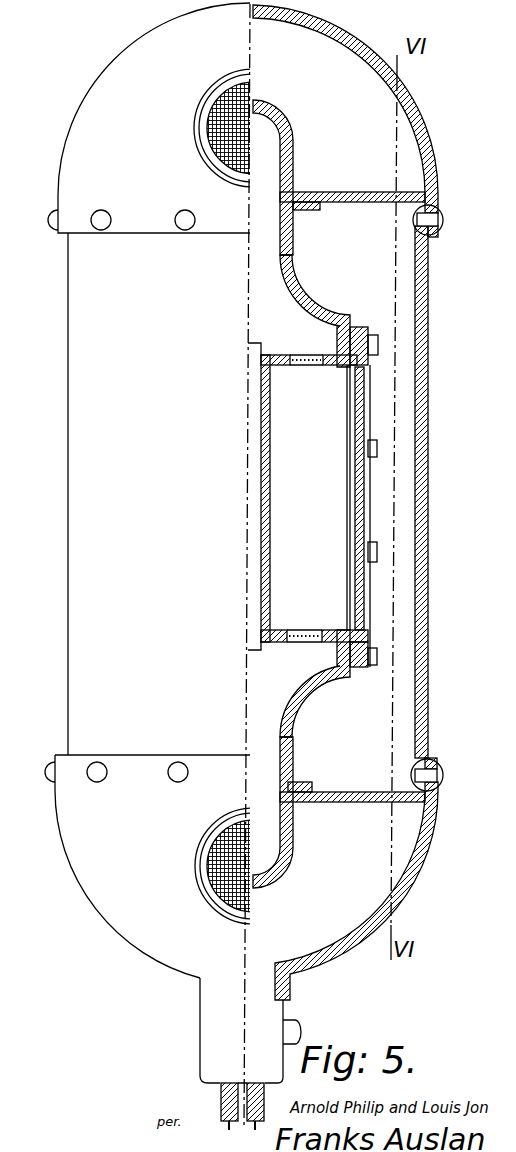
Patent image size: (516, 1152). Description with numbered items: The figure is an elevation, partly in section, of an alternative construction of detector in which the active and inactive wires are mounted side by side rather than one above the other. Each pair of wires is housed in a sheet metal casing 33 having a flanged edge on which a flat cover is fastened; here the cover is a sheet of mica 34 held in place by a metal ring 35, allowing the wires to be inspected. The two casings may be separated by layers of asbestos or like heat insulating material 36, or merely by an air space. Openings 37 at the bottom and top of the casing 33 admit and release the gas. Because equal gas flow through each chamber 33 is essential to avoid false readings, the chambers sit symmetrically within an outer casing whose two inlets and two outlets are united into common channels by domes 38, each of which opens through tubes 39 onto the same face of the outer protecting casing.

The sheet metal casing 33 is at (270, 468).
The sheet of mica 34 is at (372, 411).
The metal ring 35 is at (370, 333).
The heat insulating material 36 is at (247, 570).
The openings 37 is at (308, 364).
The domes 38 is at (318, 262).
The tubes 39 is at (300, 128).